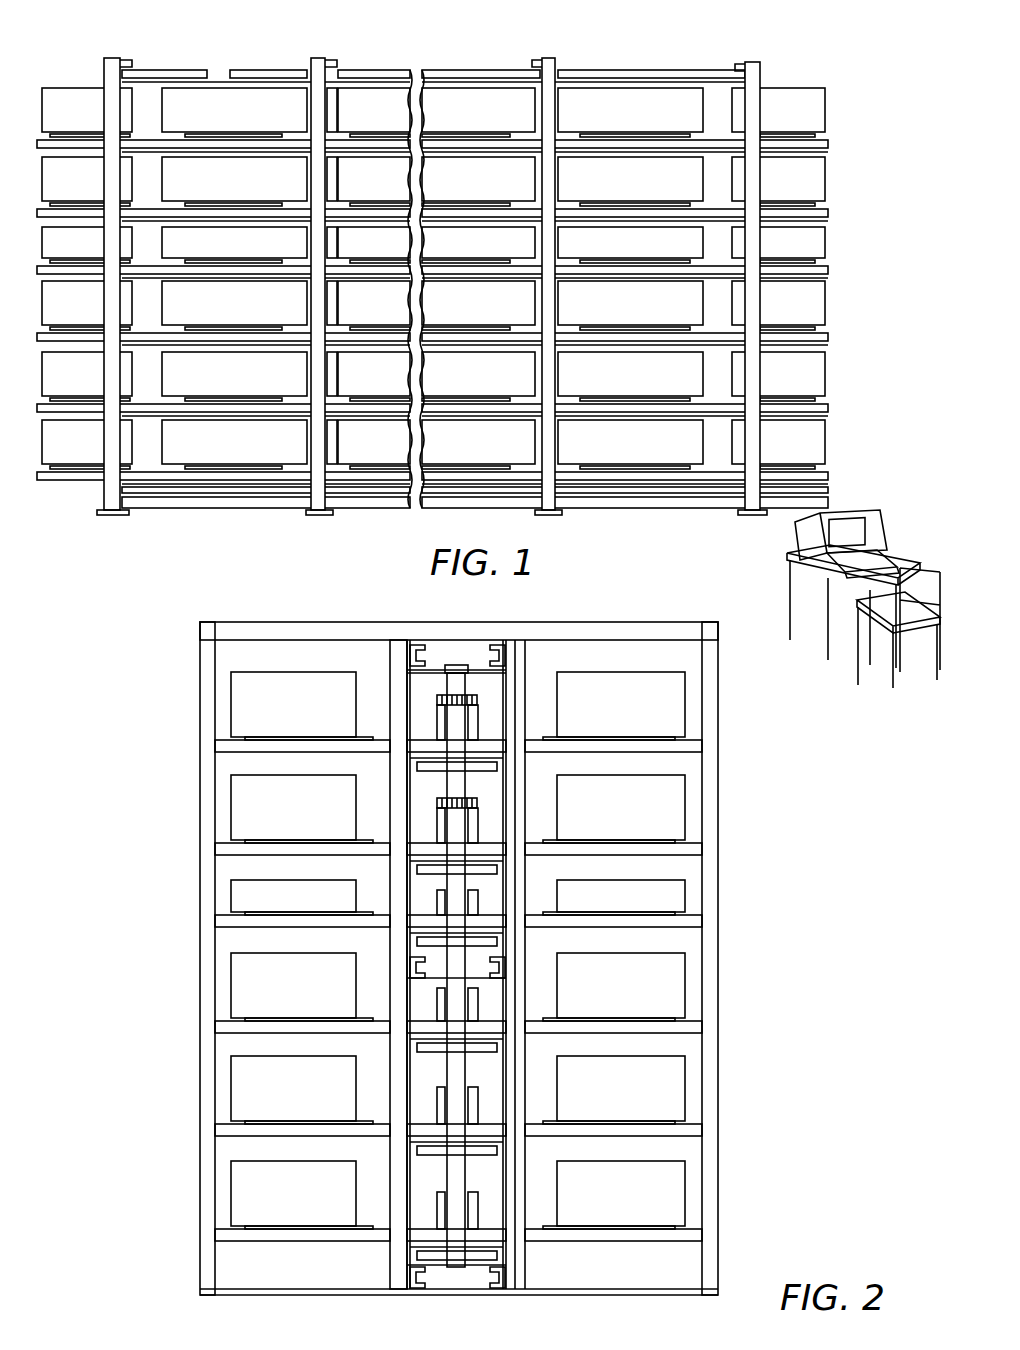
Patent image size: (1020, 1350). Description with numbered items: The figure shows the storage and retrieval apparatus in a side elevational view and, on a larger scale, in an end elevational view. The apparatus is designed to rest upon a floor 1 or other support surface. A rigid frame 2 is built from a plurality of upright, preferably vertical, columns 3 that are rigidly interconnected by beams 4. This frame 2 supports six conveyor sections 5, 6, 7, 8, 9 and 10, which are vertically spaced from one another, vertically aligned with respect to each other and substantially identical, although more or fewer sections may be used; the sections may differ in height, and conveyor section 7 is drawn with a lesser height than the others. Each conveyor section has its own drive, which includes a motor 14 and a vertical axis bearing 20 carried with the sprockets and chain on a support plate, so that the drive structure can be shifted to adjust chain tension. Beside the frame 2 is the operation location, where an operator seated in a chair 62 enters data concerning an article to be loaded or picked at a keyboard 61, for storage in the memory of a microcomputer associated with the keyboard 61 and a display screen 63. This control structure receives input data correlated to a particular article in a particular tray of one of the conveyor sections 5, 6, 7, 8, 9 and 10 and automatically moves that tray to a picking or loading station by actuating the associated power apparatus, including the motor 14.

In FIG. 1, the floor 1 is at (98, 512).
In FIG. 1, the rigid frame 2 is at (126, 50).
In FIG. 2, the rigid frame 2 is at (251, 617).
In FIG. 1, the columns 3 is at (110, 60).
In FIG. 2, the columns 3 is at (207, 668).
In FIG. 1, the beams 4 is at (131, 64).
In FIG. 2, the beams 4 is at (322, 632).
In FIG. 1, the conveyor section 5 is at (836, 116).
In FIG. 2, the conveyor section 5 is at (729, 707).
In FIG. 1, the conveyor section 6 is at (851, 169).
In FIG. 2, the conveyor section 6 is at (729, 819).
In FIG. 1, the conveyor section 7 is at (844, 247).
In FIG. 2, the conveyor section 7 is at (729, 901).
In FIG. 1, the conveyor section 8 is at (854, 291).
In FIG. 2, the conveyor section 8 is at (729, 991).
In FIG. 1, the conveyor section 9 is at (849, 373).
In FIG. 2, the conveyor section 9 is at (729, 1086).
In FIG. 1, the conveyor section 10 is at (849, 429).
In FIG. 2, the conveyor section 10 is at (729, 1194).
In FIG. 2, the motor 14 is at (472, 824).
In FIG. 2, the vertical axis bearing 20 is at (462, 1063).
In FIG. 1, the keyboard 61 is at (878, 560).
In FIG. 1, the chair 62 is at (883, 616).
In FIG. 1, the display screen 63 is at (843, 527).